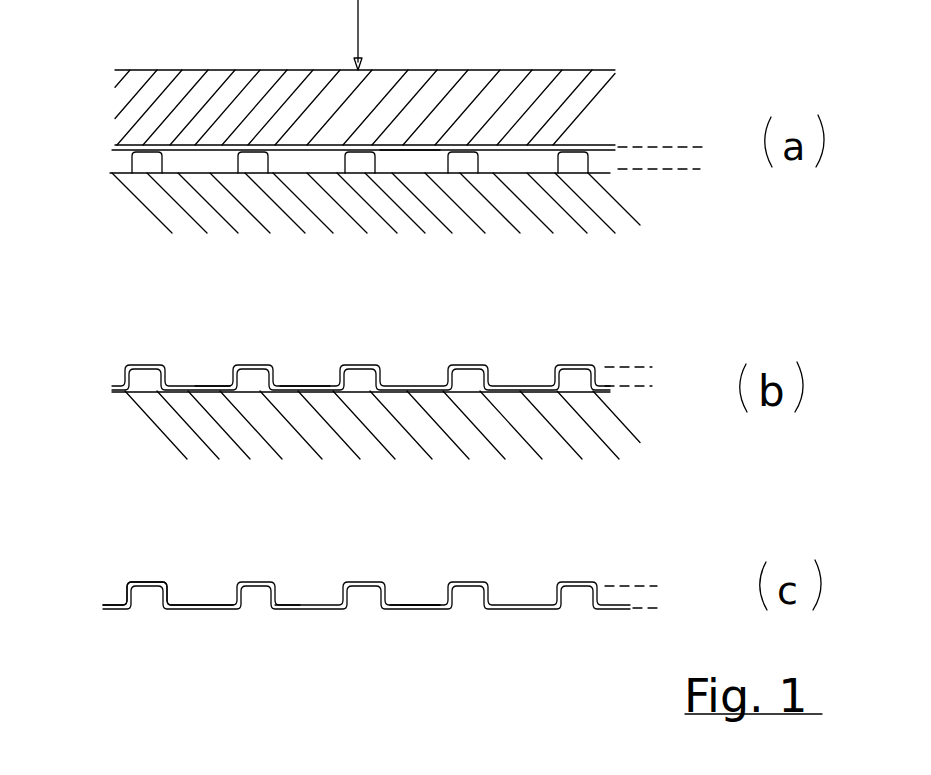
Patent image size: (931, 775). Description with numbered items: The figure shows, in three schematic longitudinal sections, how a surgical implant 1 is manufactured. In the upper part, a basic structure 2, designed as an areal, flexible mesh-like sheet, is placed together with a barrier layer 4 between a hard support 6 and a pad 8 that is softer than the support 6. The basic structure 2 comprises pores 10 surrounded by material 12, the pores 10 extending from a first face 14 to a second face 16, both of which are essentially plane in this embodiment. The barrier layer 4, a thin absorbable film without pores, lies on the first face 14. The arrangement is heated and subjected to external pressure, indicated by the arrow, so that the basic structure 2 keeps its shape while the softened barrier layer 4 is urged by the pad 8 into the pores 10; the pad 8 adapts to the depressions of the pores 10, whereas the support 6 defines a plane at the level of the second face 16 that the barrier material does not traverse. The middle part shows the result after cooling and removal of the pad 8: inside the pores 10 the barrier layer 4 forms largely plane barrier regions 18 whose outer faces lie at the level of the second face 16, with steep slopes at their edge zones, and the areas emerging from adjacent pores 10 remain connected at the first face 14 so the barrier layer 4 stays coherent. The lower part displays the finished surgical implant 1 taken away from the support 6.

The surgical implant 1 is at (178, 662).
The basic structure 2 is at (132, 162).
The barrier layer 4 is at (112, 150).
The hard support 6 is at (373, 220).
The pad 8 is at (512, 87).
The pores 10 is at (522, 160).
The material 12 is at (253, 163).
The first face 14 is at (683, 147).
The second face 16 is at (690, 172).
The barrier regions 18 is at (200, 385).